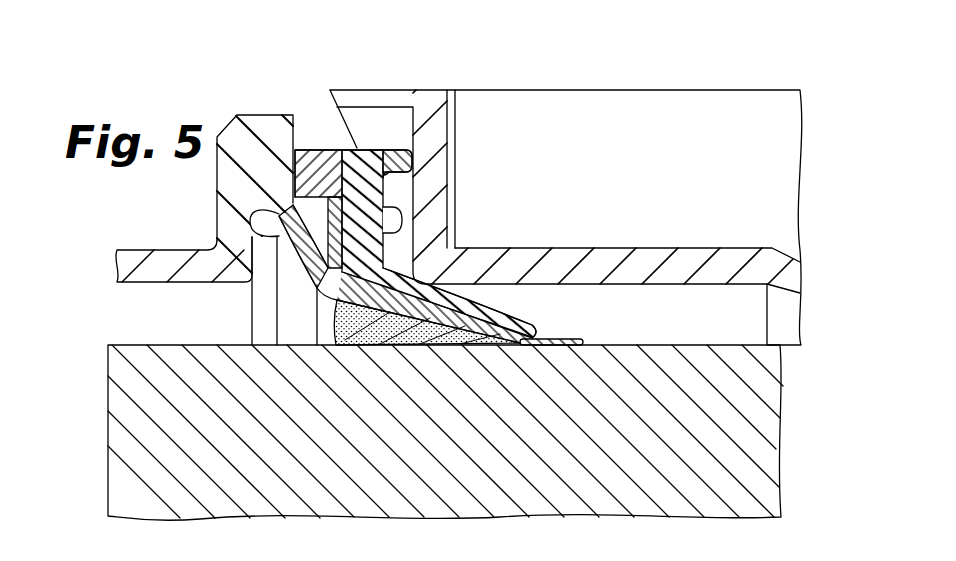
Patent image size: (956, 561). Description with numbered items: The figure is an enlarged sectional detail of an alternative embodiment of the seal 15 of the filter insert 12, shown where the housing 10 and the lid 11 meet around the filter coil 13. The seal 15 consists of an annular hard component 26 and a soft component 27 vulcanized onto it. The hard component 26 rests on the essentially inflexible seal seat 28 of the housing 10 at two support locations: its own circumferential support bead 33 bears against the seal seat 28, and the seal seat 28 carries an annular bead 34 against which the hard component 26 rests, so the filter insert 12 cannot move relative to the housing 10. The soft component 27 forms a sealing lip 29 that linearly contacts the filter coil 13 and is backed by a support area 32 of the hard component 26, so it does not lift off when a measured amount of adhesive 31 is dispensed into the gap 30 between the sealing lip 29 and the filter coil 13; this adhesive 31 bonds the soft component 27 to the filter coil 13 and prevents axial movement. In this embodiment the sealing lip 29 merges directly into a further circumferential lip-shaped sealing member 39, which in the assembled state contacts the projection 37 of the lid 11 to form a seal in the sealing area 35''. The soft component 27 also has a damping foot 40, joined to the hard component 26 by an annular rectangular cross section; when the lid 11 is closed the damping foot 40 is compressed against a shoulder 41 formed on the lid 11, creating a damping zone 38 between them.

The housing 10 is at (690, 262).
The lid 11 is at (135, 262).
The filter insert 12 is at (100, 451).
The filter coil 13 is at (130, 389).
The seal 15 is at (299, 112).
The hard component 26 is at (381, 165).
The soft component 27 is at (333, 148).
The seal seat 28 is at (432, 107).
The sealing lip 29 is at (568, 339).
The gap 30 is at (322, 321).
The adhesive 31 is at (375, 348).
The support area 32 is at (490, 312).
The support bead 33 is at (392, 160).
The bead 34 is at (396, 218).
The sealing area 35'' is at (229, 291).
The projection 37 is at (265, 223).
The damping zone 38 is at (292, 205).
The sealing member 39 is at (299, 264).
The damping foot 40 is at (316, 162).
The shoulder 41 is at (282, 147).